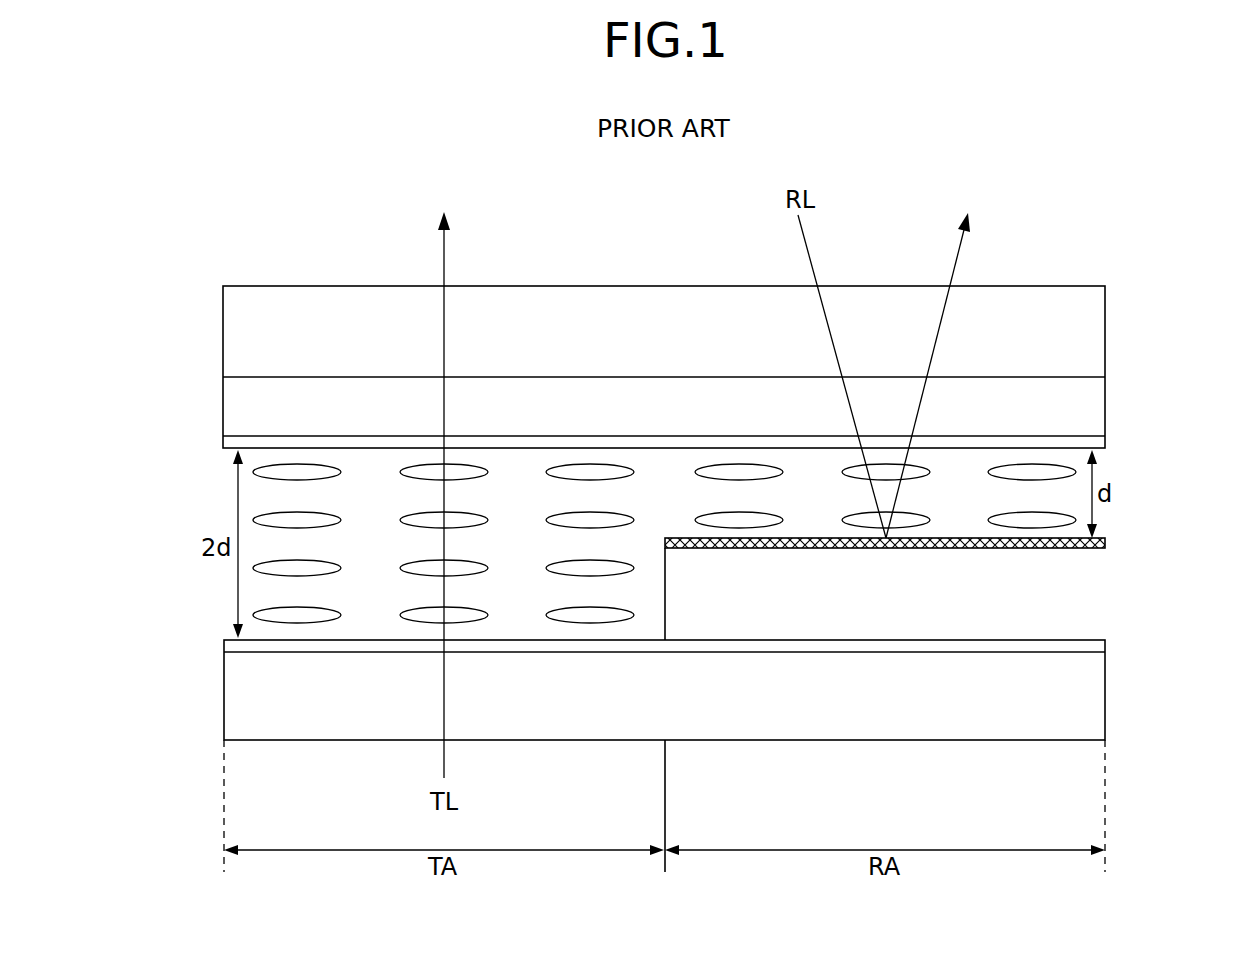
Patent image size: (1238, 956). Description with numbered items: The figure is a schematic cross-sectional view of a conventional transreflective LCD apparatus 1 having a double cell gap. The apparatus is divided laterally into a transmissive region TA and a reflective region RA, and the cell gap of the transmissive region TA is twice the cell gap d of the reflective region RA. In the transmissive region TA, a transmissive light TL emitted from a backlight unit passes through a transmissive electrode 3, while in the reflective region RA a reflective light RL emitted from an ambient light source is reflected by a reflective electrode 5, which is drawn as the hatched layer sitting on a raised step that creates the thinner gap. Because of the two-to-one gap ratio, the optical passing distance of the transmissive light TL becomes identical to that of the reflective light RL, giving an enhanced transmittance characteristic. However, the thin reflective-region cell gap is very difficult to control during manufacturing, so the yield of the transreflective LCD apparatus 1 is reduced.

The transreflective LCD apparatus 1 is at (1209, 171).
The transmissive electrode 3 is at (225, 646).
The reflective electrode 5 is at (1107, 540).